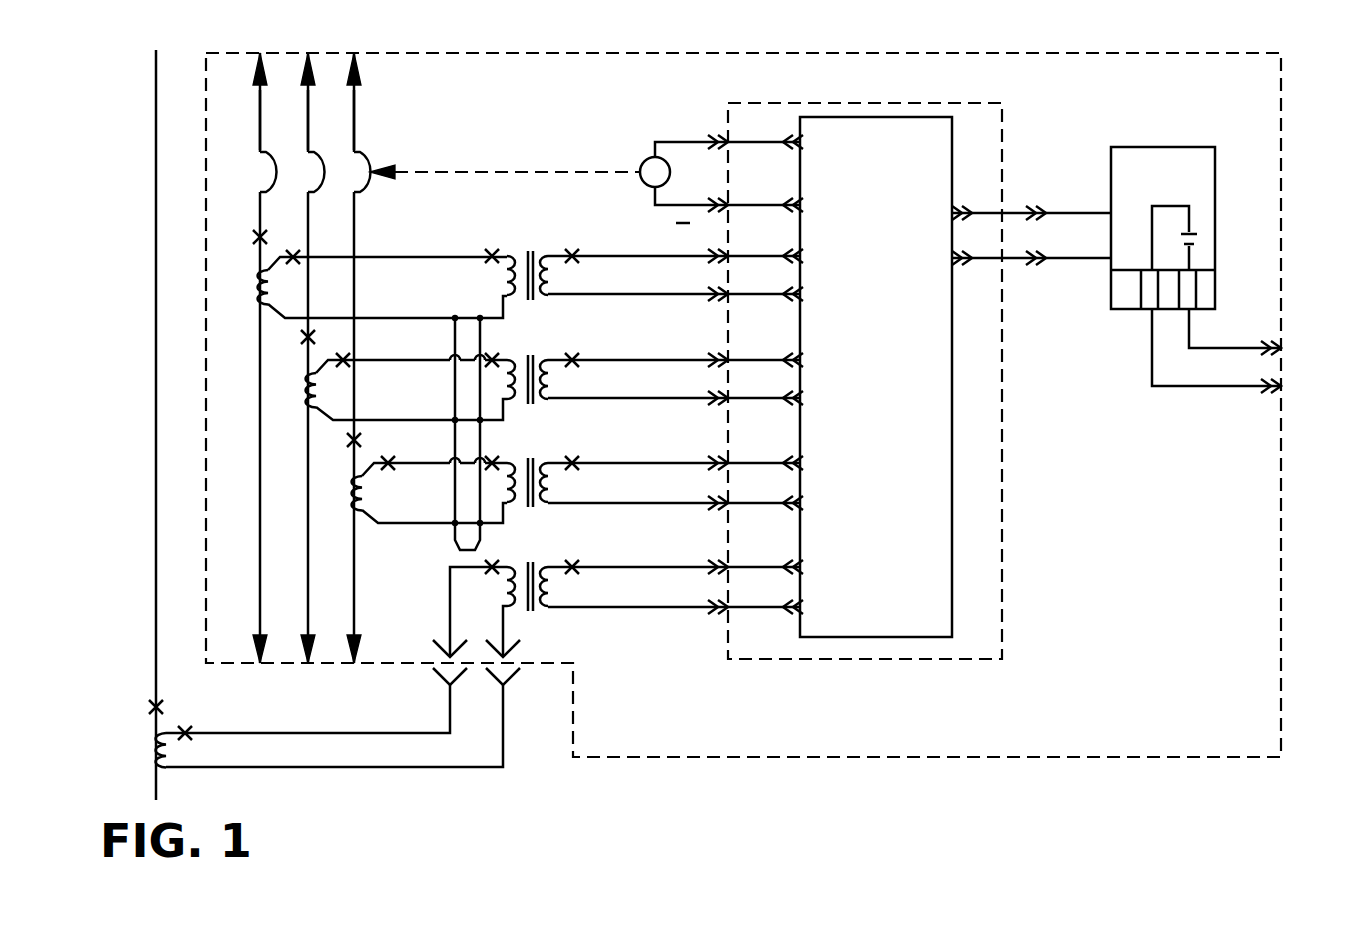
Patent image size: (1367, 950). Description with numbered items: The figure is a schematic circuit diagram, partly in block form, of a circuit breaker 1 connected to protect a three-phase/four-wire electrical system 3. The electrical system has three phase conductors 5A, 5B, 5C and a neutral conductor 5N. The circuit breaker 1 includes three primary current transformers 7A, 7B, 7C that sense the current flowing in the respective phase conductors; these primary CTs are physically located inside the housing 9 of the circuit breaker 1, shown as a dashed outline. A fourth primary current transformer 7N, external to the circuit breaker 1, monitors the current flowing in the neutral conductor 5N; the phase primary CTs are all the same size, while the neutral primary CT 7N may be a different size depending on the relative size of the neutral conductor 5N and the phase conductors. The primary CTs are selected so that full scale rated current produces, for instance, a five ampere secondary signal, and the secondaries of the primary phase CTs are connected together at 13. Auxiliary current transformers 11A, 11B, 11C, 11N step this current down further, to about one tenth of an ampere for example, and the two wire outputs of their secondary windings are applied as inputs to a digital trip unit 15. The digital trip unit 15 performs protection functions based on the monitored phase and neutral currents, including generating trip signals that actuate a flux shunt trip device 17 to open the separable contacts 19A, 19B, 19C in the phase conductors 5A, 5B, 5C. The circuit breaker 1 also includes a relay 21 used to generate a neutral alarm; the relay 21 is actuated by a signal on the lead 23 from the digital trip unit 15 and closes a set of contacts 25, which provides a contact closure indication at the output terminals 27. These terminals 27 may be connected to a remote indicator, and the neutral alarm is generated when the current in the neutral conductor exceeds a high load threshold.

The circuit breaker 1 is at (907, 718).
The three-phase/four-wire electrical system 3 is at (220, 38).
The phase conductor 5A is at (258, 110).
The phase conductor 5B is at (306, 119).
The phase conductor 5C is at (357, 136).
The neutral conductor 5N is at (155, 148).
The primary current transformer 7A is at (250, 306).
The primary current transformer 7B is at (300, 410).
The primary current transformer 7C is at (340, 513).
The neutral primary current transformer 7N is at (145, 735).
The housing 9 is at (1080, 50).
The auxiliary current transformer 11A is at (512, 257).
The auxiliary current transformer 11B is at (505, 362).
The auxiliary current transformer 11C is at (514, 506).
The auxiliary current transformer 11N is at (514, 608).
The connection of primary CT secondaries 13 is at (455, 550).
The digital trip unit 15 is at (953, 583).
The flux shunt trip device 17 is at (645, 160).
The separable contacts 19A is at (272, 172).
The separable contacts 19B is at (319, 172).
The separable contacts 19C is at (366, 157).
The relay 21 is at (1216, 170).
The lead 23 is at (1017, 211).
The set of contacts 25 is at (1200, 237).
The output terminals 27 is at (1283, 350).